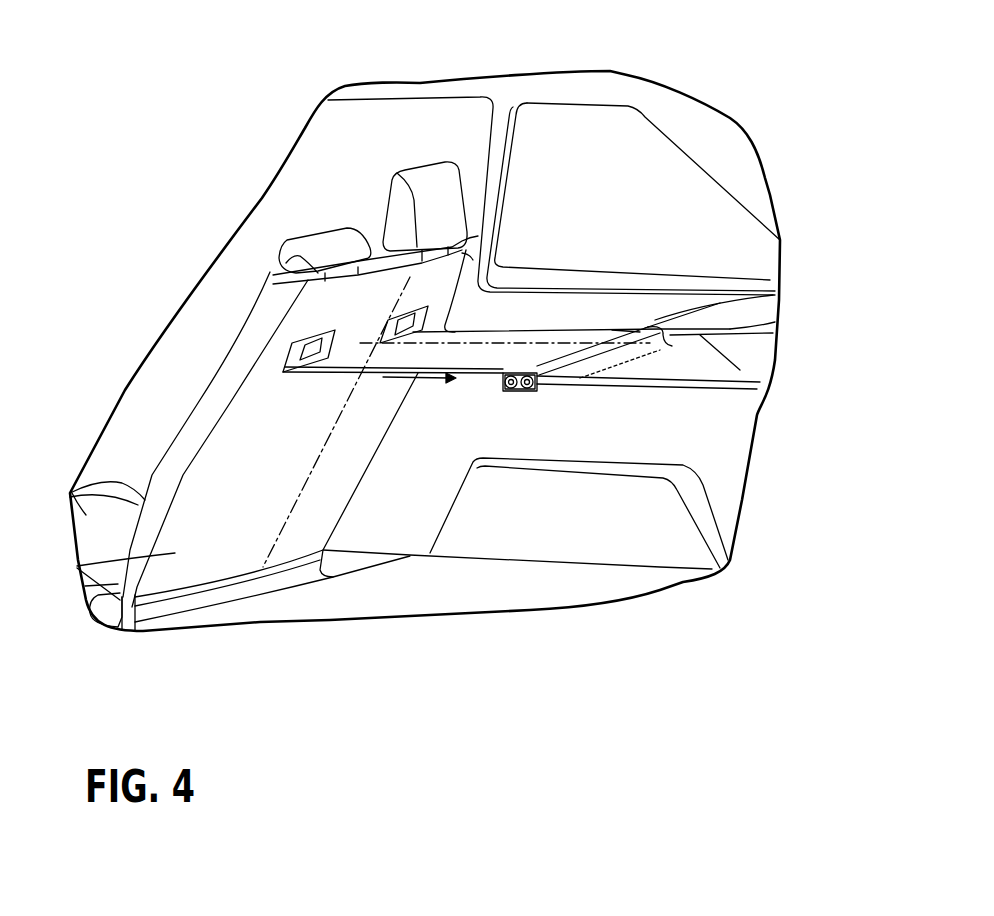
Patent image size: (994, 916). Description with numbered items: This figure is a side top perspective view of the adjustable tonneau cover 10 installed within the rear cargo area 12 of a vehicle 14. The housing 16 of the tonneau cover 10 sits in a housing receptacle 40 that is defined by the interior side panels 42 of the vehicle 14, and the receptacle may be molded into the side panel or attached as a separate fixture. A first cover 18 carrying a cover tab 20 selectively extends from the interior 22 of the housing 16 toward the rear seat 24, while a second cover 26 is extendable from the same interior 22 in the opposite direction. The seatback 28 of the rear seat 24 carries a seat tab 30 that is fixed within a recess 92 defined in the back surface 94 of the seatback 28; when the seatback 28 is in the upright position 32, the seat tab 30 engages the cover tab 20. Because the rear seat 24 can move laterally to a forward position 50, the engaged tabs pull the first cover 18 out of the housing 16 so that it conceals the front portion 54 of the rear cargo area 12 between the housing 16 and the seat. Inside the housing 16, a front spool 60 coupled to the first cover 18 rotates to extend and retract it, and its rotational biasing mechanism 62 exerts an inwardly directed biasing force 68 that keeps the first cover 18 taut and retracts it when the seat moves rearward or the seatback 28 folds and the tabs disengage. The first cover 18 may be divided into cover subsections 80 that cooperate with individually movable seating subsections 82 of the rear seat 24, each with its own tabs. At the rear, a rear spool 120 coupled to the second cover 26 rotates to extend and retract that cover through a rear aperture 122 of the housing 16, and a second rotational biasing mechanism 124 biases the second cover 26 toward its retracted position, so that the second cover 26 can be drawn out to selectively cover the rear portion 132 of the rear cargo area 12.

The adjustable tonneau cover 10 is at (684, 298).
The rear cargo area 12 is at (669, 174).
The vehicle 14 is at (387, 74).
The housing 16 is at (720, 303).
The first cover 18 is at (470, 357).
The cover tab 20 is at (322, 372).
The interior 22 is at (520, 393).
The rear seat 24 is at (73, 490).
The second cover 26 is at (740, 370).
The seatback 28 is at (77, 568).
The seat tab 30 is at (283, 370).
The upright position 32 is at (294, 230).
The housing receptacle 40 is at (640, 332).
The interior side panels 42 is at (660, 528).
The forward position 50 is at (245, 308).
The front portion 54 is at (417, 493).
The front spool 60 is at (507, 377).
The rotational biasing mechanism 62 is at (517, 390).
The inwardly directed biasing force 68 is at (427, 380).
The cover subsections 80 is at (507, 360).
The seating subsections 82 is at (183, 427).
The recess 92 is at (300, 352).
The back surface 94 is at (252, 528).
The rear spool 120 is at (547, 383).
The rear aperture 122 is at (740, 323).
The second rotational biasing mechanism 124 is at (537, 388).
The rear portion 132 is at (707, 430).